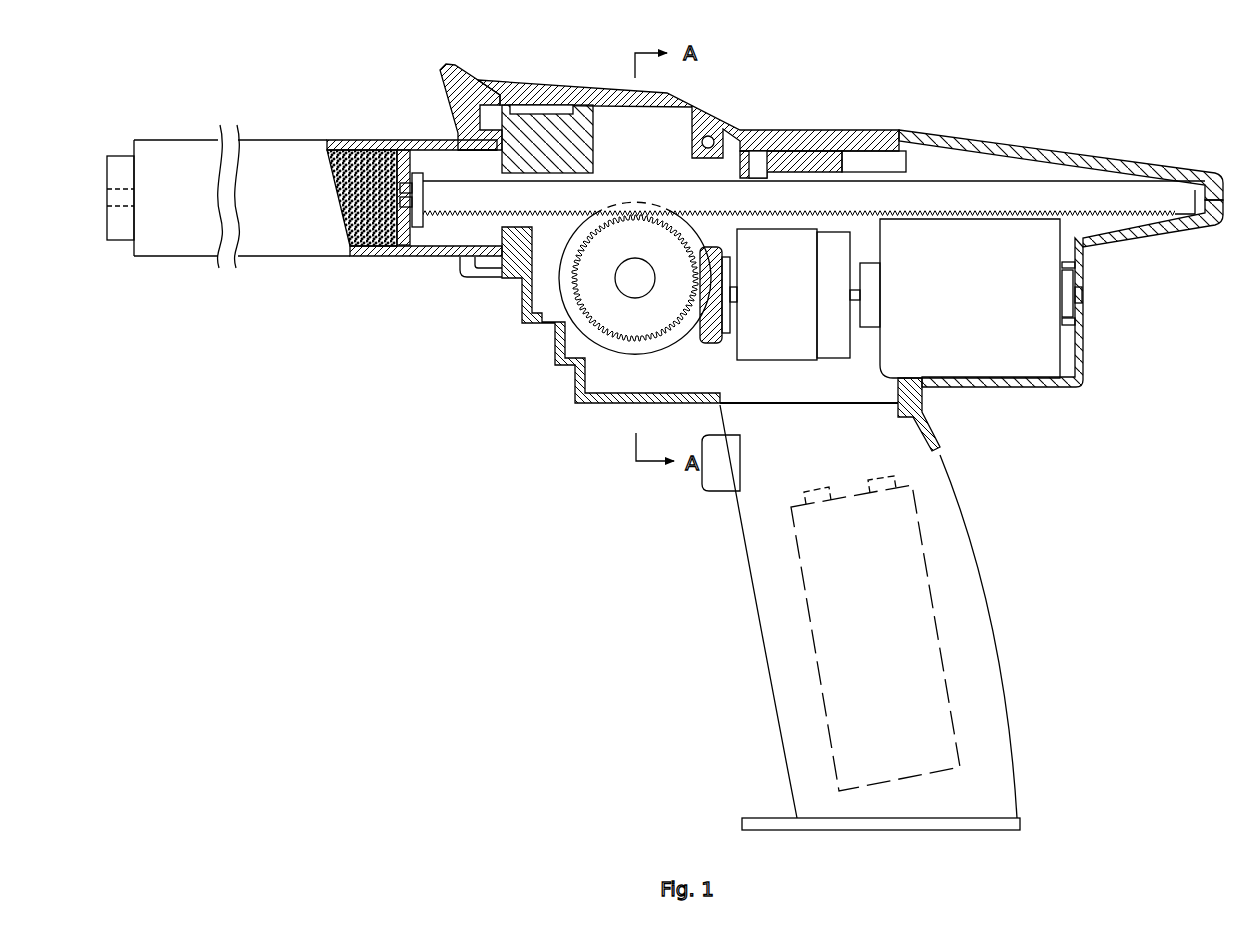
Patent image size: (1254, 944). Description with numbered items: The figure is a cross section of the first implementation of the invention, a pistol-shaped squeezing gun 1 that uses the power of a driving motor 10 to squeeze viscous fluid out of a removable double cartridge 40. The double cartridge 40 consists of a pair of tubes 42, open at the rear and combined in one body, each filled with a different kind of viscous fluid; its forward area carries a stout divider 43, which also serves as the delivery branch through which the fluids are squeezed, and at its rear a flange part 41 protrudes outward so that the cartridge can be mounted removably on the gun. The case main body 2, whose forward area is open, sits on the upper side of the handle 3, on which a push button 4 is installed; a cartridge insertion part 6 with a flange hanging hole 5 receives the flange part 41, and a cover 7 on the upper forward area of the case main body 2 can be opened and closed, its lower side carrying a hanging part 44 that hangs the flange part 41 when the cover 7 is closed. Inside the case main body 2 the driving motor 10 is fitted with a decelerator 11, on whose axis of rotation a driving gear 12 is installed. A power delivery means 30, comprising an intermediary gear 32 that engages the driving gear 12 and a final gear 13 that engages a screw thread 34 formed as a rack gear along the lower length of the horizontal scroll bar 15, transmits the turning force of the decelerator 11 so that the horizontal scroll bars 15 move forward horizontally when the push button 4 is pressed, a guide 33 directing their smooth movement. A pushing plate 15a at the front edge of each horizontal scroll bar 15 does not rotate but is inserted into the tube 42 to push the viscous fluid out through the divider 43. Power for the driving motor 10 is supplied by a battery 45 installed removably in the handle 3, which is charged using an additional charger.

The squeezing gun 1 is at (557, 540).
The case main body 2 is at (1115, 162).
The handle 3 is at (1000, 733).
The push button 4 is at (730, 481).
The flange hanging hole 5 is at (493, 265).
The cartridge insertion part 6 is at (465, 262).
The cover 7 is at (565, 100).
The driving motor 10 is at (1010, 350).
The decelerator 11 is at (800, 330).
The driving gear 12 is at (717, 257).
The final gear 13 is at (592, 290).
The horizontal scroll bar 15 is at (960, 202).
The pushing plate 15a is at (403, 230).
The power delivery means 30 is at (625, 318).
The intermediary gear 32 is at (397, 200).
The guide 33 is at (811, 175).
The screw thread 34 is at (1100, 217).
The double cartridge 40 is at (190, 172).
The flange part 41 is at (492, 130).
The tube 42 is at (370, 141).
The divider 43 is at (122, 203).
The hanging part 44 is at (467, 155).
The battery 45 is at (843, 685).